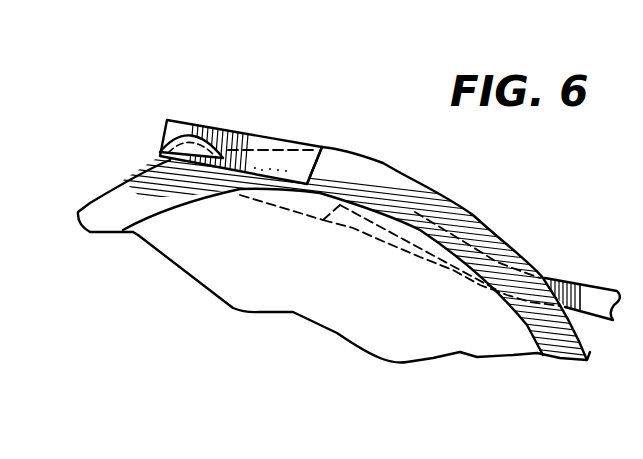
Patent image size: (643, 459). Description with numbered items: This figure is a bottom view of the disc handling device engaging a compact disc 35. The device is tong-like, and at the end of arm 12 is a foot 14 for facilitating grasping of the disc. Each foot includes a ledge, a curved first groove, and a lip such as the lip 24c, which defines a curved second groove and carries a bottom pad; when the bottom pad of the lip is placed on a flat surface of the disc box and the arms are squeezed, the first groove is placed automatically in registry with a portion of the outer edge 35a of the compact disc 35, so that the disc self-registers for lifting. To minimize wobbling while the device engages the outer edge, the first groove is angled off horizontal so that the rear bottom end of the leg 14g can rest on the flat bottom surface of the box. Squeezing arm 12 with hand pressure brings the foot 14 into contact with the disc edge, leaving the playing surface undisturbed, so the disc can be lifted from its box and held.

The arm 12 is at (576, 285).
The foot 14 is at (233, 133).
The leg bottom end 14g is at (290, 160).
The lip 24c is at (186, 137).
The compact disc 35 is at (297, 300).
The outer edge of the disc 35a is at (463, 203).